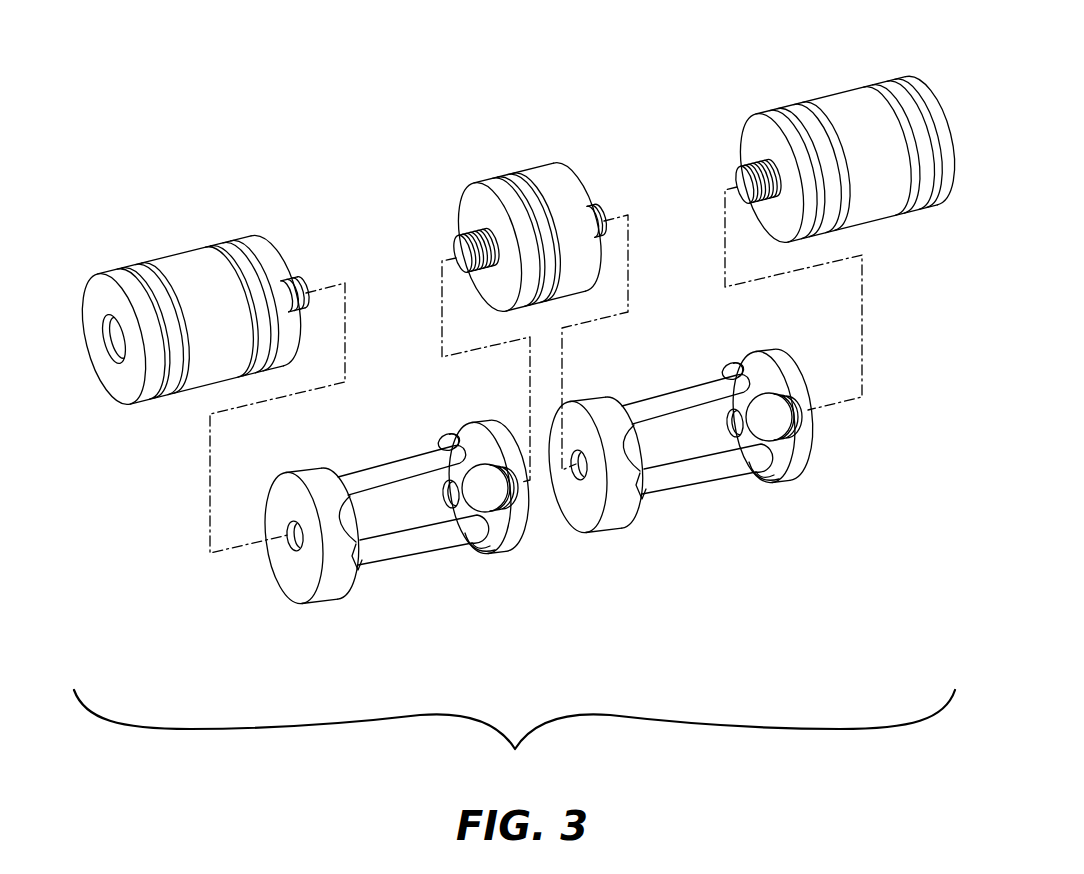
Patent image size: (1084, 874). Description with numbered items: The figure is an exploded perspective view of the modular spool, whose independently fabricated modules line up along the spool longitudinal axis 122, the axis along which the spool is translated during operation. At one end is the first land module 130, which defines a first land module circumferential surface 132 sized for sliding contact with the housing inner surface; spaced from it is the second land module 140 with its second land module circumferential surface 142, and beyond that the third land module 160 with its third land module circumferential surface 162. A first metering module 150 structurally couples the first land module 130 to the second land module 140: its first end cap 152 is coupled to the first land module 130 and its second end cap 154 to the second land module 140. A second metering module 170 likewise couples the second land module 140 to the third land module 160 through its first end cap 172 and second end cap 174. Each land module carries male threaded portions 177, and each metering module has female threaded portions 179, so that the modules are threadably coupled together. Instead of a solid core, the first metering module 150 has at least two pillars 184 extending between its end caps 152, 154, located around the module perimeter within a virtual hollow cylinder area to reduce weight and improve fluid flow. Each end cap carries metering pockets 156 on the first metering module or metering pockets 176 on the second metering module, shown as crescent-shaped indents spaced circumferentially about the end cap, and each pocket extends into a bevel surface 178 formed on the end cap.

The spool longitudinal axis 122 is at (884, 308).
The first land module 130 is at (176, 266).
The first land module circumferential surface 132 is at (142, 395).
The second land module 140 is at (507, 174).
The second land module circumferential surface 142 is at (545, 165).
The third land module 160 is at (830, 92).
The third land module circumferential surface 162 is at (888, 222).
The male threaded portions 177 is at (300, 282).
The first metering module 150 is at (383, 517).
The first end cap 152 is at (278, 495).
The second end cap 154 is at (485, 435).
The metering pocket 156 is at (358, 560).
The pillars 184 is at (360, 478).
The second metering module 170 is at (716, 454).
The first end cap 172 is at (590, 515).
The second end cap 174 is at (815, 455).
The metering pocket 176 is at (692, 496).
The bevel surface 178 is at (765, 355).
The female threaded portions 179 is at (280, 555).